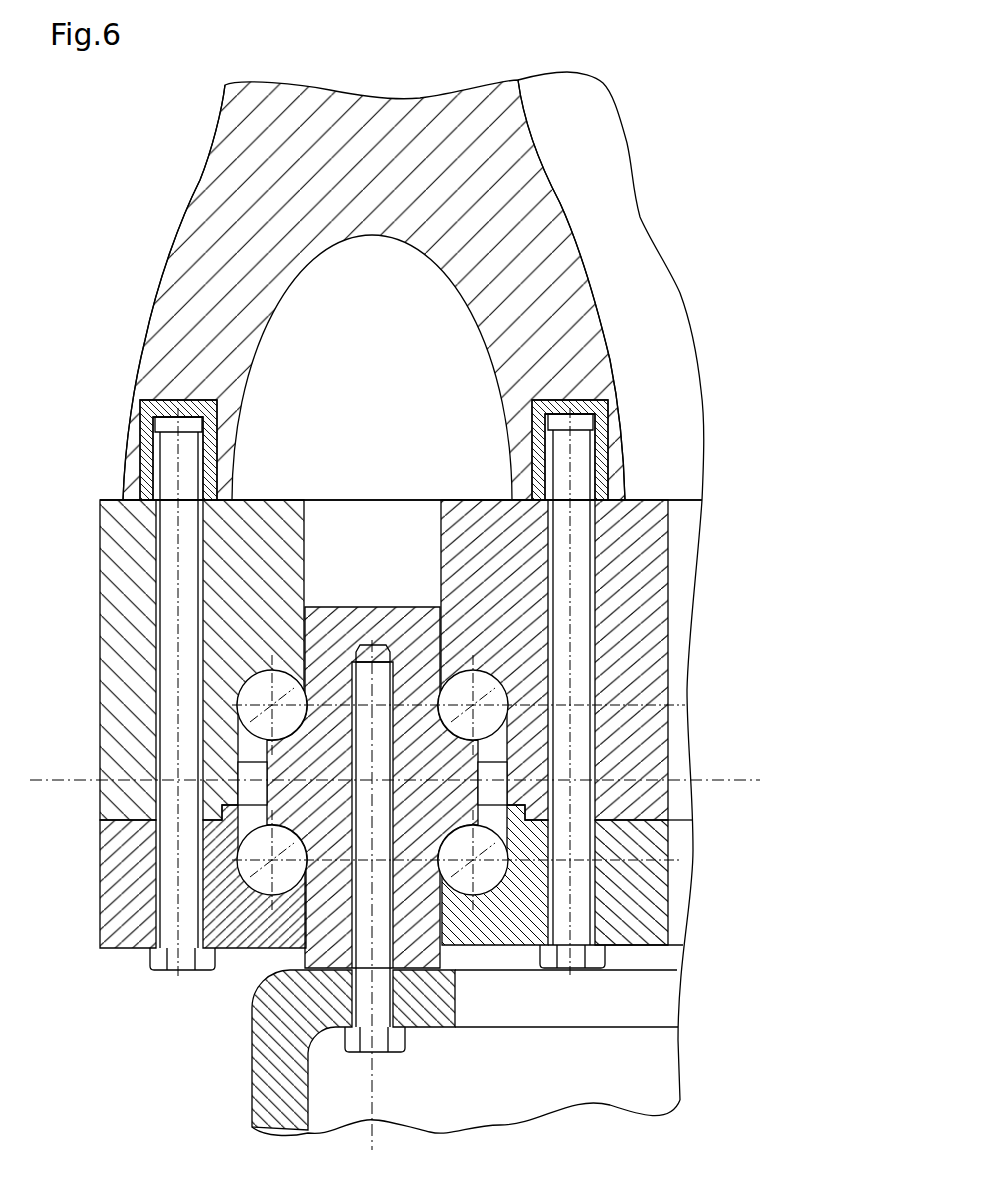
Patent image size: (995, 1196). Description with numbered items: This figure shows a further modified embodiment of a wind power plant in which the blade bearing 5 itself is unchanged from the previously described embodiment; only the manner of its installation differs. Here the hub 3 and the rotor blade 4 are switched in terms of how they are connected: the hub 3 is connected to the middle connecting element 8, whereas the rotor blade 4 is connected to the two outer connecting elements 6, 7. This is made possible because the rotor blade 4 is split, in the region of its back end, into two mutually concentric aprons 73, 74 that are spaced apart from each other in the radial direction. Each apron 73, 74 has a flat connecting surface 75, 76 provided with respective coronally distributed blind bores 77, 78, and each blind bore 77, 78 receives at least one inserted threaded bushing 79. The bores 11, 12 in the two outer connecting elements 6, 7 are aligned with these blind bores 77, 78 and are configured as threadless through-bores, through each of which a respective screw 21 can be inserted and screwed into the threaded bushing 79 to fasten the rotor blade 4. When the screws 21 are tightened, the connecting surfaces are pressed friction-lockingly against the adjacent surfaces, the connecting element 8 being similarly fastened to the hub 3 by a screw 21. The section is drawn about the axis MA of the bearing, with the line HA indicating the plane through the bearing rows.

The hub 3 is at (272, 1044).
The rotor blade 4 is at (240, 166).
The blade bearing 5 is at (106, 378).
The outer connecting element 6 is at (635, 751).
The outer connecting element 7 is at (130, 764).
The middle connecting element 8 is at (430, 960).
The through-bore 11 is at (595, 618).
The through-bore 12 is at (148, 628).
The screw 21 is at (168, 898).
The apron 73 is at (590, 348).
The apron 74 is at (212, 228).
The connecting surface 75 is at (602, 503).
The connecting surface 76 is at (143, 503).
The blind bore 77 is at (583, 404).
The blind bore 78 is at (168, 407).
The threaded bushing 79 is at (147, 438).
The horizontal axis HA is at (381, 784).
The main axis MA is at (373, 907).